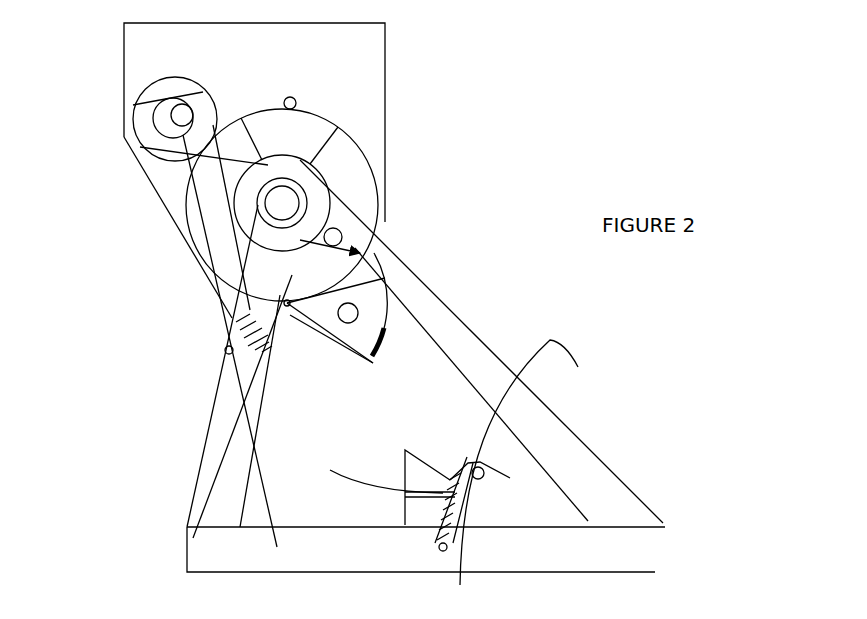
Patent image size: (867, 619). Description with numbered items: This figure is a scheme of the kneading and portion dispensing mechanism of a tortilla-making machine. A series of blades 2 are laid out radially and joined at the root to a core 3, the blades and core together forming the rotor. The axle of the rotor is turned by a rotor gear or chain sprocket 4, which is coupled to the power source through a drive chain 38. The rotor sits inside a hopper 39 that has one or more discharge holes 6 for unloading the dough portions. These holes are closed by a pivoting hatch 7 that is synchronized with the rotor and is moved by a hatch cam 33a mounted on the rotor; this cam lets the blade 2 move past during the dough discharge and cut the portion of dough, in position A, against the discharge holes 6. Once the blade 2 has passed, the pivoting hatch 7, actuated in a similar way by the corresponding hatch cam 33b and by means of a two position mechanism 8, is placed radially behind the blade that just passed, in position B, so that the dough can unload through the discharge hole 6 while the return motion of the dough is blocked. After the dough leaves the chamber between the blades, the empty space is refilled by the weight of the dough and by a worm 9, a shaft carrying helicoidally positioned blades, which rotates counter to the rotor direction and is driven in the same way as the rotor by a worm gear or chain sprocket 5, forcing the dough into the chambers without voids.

The blades 2 is at (263, 130).
The core 3 is at (330, 178).
The rotor gear or chain sprocket 4 is at (253, 188).
The worm gear or chain sprocket 5 is at (150, 130).
The discharge holes 6 is at (283, 303).
The pivoting hatch 7 is at (367, 253).
The two position mechanism 8 is at (233, 333).
The worm 9 is at (140, 115).
The hatch cam 33a is at (380, 153).
The hatch cam 33b is at (385, 208).
The drive chain 38 is at (240, 397).
The hopper 39 is at (250, 56).